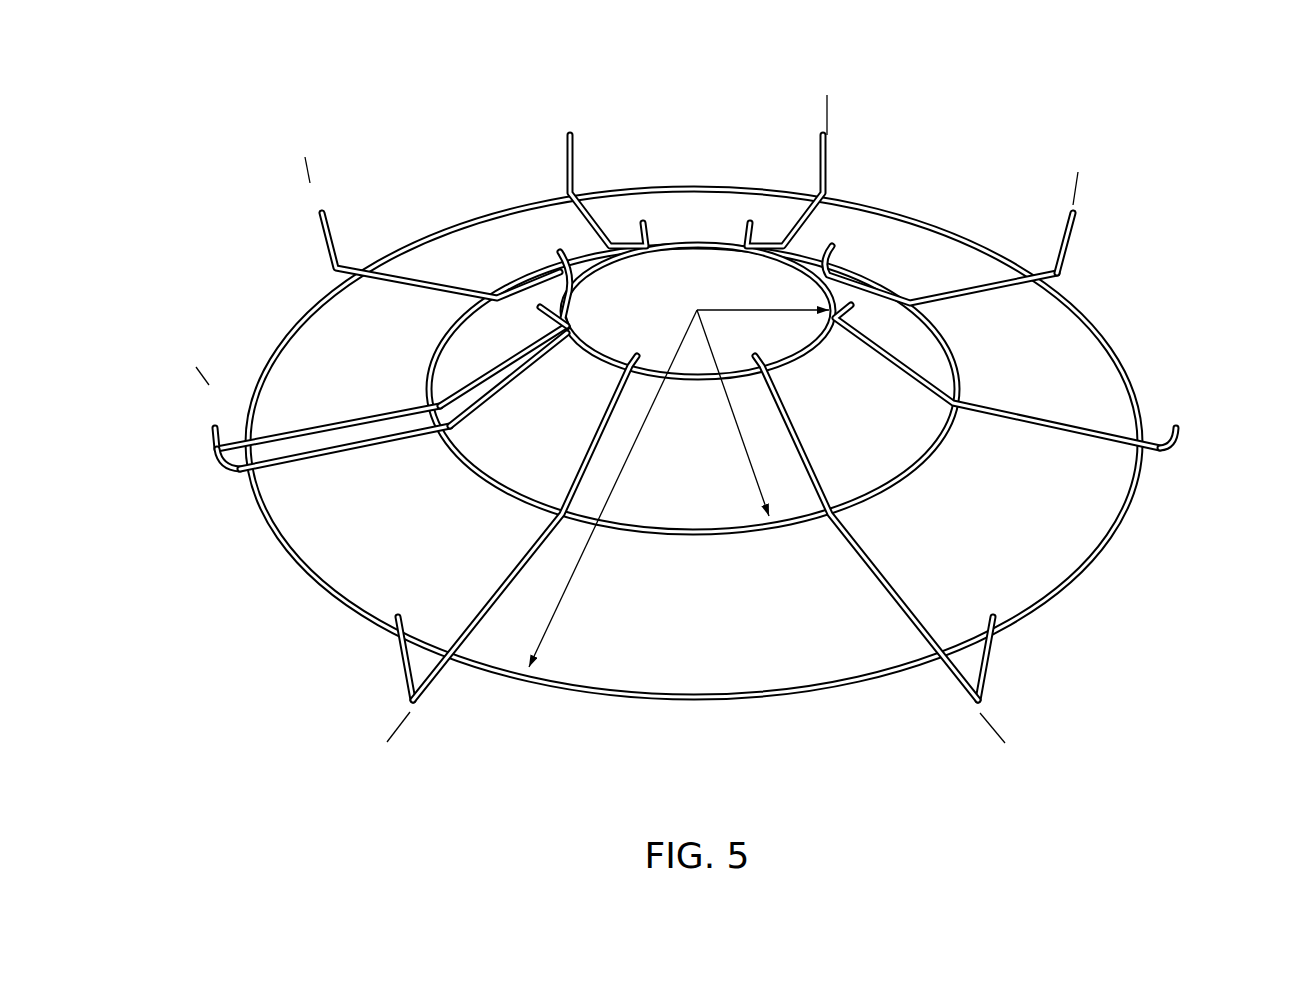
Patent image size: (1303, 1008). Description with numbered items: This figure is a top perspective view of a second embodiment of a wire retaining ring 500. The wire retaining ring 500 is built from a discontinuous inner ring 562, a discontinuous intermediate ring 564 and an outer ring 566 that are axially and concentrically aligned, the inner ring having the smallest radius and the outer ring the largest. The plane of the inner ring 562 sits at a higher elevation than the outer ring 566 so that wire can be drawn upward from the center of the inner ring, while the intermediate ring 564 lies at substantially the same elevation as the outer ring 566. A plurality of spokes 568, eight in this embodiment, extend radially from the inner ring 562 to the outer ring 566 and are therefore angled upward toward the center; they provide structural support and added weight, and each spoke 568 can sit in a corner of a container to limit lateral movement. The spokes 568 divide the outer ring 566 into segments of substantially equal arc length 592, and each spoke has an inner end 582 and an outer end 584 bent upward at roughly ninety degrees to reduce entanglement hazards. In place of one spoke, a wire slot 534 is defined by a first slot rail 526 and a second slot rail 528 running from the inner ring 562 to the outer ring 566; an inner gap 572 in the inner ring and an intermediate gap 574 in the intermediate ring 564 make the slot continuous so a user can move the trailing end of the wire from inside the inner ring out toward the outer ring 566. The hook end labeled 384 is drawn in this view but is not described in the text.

The wire retaining ring 500 is at (694, 405).
The first slot rail 526 is at (214, 436).
The second slot rail 528 is at (236, 472).
The wire slot 534 is at (300, 449).
The inner ring 562 is at (677, 250).
The intermediate ring 564 is at (848, 272).
The outer ring 566 is at (1073, 310).
The spokes 568 is at (1055, 428).
The inner gap 572 is at (576, 325).
The intermediate gap 574 is at (450, 414).
The inner end 582 is at (562, 250).
The outer end 584 is at (1074, 229).
The hook end 384 is at (1178, 446).
The arc length 592 is at (1071, 188).